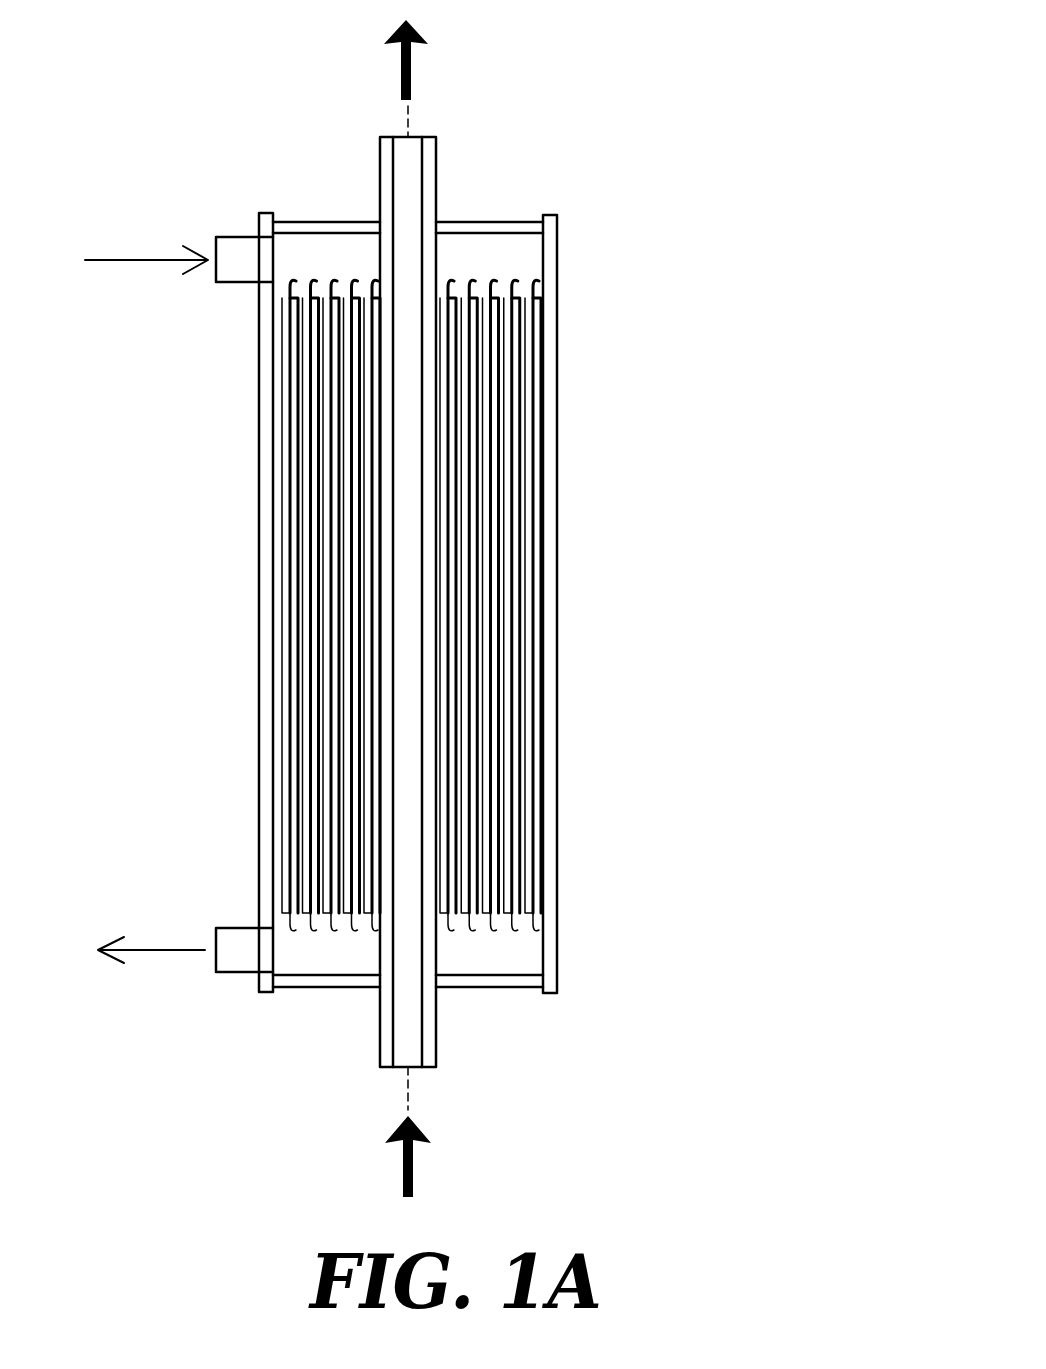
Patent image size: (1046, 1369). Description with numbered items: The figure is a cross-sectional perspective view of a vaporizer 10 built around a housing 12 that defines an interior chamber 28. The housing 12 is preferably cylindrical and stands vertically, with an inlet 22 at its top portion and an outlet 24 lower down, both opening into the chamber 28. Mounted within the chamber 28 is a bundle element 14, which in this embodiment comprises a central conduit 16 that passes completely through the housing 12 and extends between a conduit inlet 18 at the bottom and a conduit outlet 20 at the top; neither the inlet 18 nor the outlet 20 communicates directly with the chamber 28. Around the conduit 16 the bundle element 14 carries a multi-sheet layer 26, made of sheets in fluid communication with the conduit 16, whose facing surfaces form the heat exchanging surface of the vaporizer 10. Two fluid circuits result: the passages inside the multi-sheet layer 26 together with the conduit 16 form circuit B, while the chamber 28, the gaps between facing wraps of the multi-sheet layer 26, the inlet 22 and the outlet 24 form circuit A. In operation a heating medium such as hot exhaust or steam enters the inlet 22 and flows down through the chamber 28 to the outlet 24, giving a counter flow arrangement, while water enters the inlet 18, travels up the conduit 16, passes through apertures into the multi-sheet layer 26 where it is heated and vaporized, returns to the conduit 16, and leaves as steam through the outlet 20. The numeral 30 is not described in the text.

The vaporizer 10 is at (708, 86).
The housing 12 is at (568, 435).
The bundle element 14 is at (500, 266).
The conduit 16 is at (376, 1008).
The inlet 18 is at (438, 1024).
The outlet 20 is at (380, 174).
The inlet 22 is at (228, 283).
The outlet 24 is at (234, 928).
The multi-sheet layer 26 is at (533, 332).
The chamber 28 is at (495, 286).
The housing wall 30 is at (558, 744).